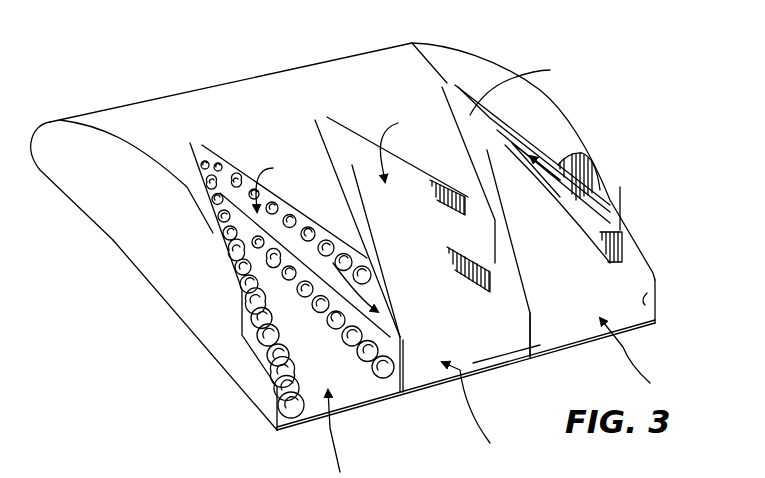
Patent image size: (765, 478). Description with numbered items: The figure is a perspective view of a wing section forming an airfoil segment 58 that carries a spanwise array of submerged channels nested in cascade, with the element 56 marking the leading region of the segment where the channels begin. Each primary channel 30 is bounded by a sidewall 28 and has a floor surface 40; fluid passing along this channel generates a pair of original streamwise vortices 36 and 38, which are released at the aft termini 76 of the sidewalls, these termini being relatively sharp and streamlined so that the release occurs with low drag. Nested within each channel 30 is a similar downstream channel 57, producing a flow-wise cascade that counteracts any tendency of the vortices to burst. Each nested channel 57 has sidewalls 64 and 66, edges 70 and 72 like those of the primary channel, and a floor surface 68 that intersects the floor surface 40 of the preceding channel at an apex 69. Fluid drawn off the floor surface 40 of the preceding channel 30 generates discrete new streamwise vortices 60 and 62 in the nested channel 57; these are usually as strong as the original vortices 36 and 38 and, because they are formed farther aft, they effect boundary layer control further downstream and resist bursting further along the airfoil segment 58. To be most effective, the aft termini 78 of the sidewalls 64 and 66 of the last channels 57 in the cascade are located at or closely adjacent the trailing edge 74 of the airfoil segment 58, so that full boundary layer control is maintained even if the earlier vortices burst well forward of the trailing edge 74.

The sidewall 28 is at (483, 237).
The channel 30 is at (598, 128).
The vortex 36 is at (250, 343).
The vortex 38 is at (312, 235).
The floor surface 40 is at (255, 195).
The bent plate edge 56 is at (190, 147).
The channel 57 is at (504, 398).
The airfoil segment 58 is at (470, 67).
The streamwise vortex 60 is at (293, 417).
The streamwise vortex 62 is at (377, 393).
The sidewall 64 is at (593, 367).
The sidewall 66 is at (375, 350).
The floor surface 68 is at (473, 363).
The apex 69 is at (230, 198).
The edge 70 is at (387, 300).
The edge 72 is at (507, 290).
The trailing edge 74 is at (623, 323).
The aft terminus 76 is at (245, 325).
The aft terminus 78 is at (283, 397).